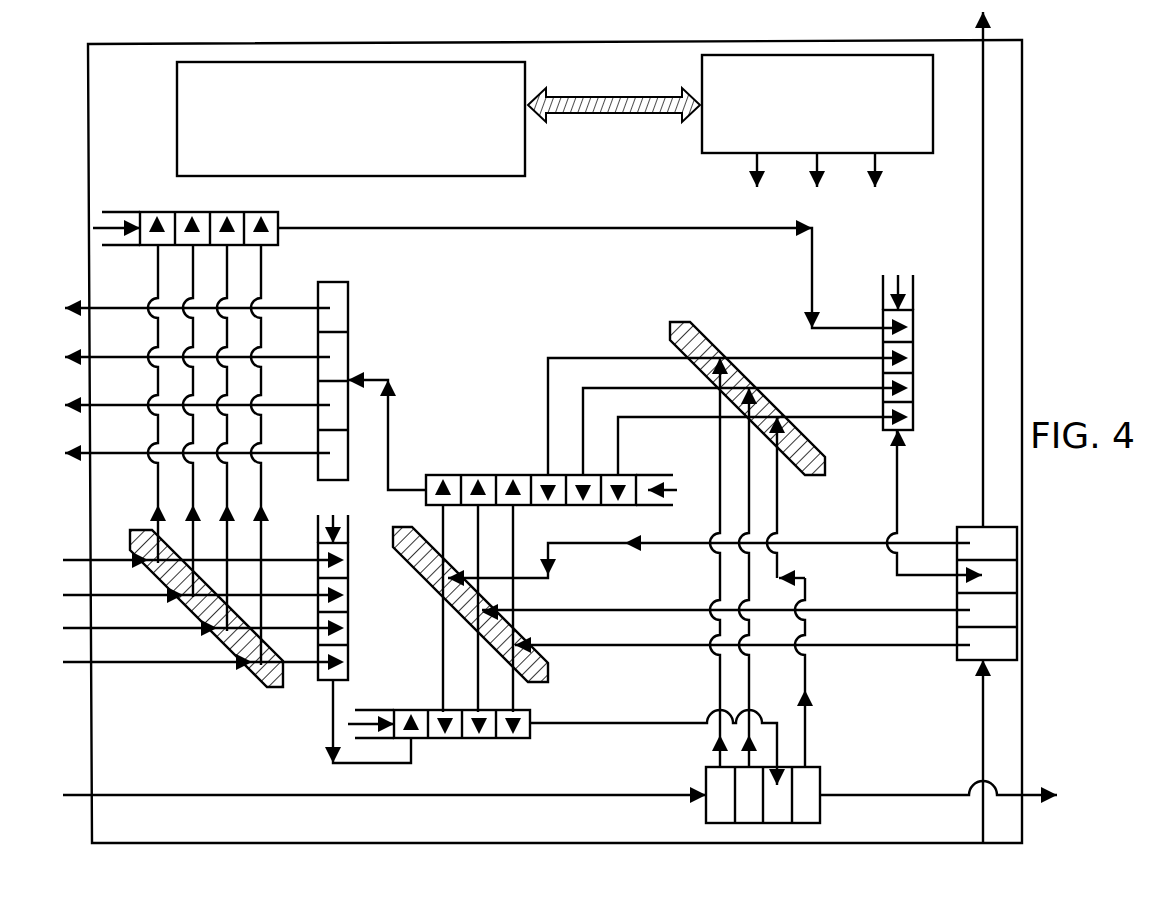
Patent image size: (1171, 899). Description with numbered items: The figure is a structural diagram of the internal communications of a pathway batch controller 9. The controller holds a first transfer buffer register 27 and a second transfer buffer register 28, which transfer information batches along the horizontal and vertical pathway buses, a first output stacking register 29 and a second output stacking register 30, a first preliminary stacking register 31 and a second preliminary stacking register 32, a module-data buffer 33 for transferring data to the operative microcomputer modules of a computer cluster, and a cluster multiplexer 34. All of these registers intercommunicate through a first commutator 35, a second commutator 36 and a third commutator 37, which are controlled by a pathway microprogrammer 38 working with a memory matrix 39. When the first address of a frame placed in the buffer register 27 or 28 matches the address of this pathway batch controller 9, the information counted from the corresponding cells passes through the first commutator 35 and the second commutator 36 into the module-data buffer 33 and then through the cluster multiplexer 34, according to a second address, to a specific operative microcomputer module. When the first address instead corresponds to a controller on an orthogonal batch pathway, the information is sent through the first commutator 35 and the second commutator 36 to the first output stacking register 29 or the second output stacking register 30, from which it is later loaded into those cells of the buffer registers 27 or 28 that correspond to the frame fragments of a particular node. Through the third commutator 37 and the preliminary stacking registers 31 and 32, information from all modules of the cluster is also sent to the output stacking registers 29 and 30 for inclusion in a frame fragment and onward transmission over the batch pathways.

The pathway batch controller 9 is at (527, 263).
The first transfer buffer register 27 is at (820, 767).
The second transfer buffer register 28 is at (957, 525).
The first output stacking register 29 is at (463, 738).
The second output stacking register 30 is at (913, 345).
The first preliminary stacking register 31 is at (280, 213).
The second preliminary stacking register 32 is at (348, 622).
The module-data buffer 33 is at (478, 475).
The cluster multiplexer 34 is at (348, 353).
The first commutator 35 is at (822, 475).
The second commutator 36 is at (548, 682).
The third commutator 37 is at (267, 690).
The pathway microprogrammer 38 is at (804, 85).
The memory matrix 39 is at (338, 108).